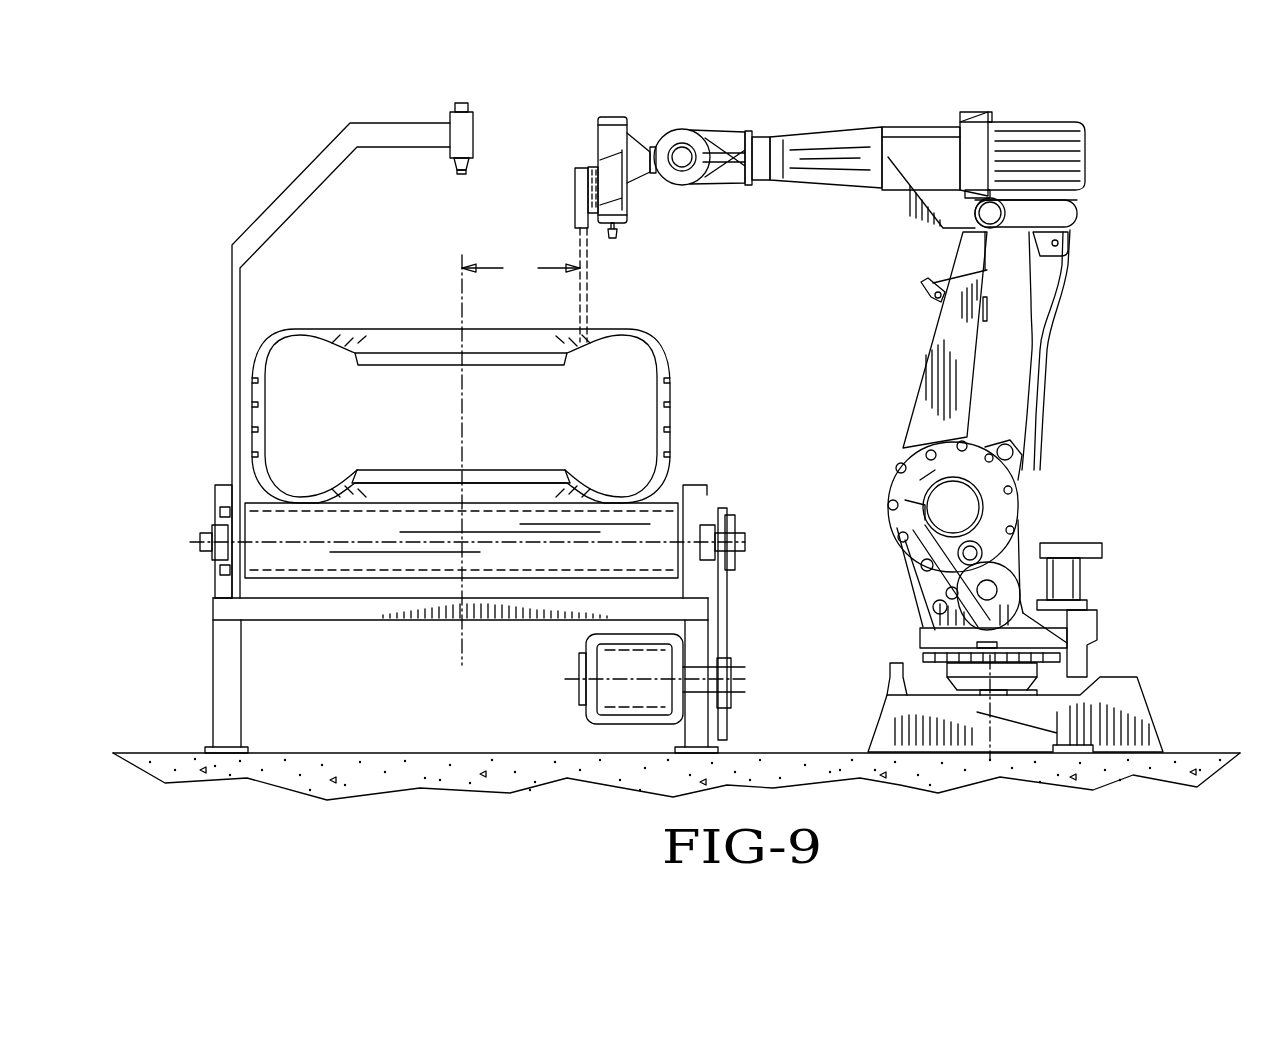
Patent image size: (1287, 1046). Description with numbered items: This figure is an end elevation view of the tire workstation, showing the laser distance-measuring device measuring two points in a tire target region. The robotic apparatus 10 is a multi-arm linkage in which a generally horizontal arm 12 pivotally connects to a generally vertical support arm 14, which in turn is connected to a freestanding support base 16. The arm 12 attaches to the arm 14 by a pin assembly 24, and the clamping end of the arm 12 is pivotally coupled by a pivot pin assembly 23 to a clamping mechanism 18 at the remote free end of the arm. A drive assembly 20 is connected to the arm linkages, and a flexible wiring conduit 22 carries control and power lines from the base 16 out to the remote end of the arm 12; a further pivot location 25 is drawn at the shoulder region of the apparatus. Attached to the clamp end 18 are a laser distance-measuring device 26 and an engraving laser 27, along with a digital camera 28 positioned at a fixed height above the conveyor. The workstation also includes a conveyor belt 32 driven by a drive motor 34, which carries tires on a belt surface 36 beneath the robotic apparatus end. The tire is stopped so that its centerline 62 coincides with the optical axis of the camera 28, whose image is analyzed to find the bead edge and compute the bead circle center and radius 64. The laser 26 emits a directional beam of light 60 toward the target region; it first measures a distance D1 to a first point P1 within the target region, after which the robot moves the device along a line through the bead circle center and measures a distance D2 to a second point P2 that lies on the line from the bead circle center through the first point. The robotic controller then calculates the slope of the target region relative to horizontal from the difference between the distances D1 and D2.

The robotic apparatus 10 is at (1210, 168).
The horizontal arm 12 is at (818, 156).
The vertical support arm 14 is at (951, 363).
The support base 16 is at (1128, 723).
The clamping mechanism 18 is at (678, 130).
The drive assembly 20 is at (906, 496).
The flexible wiring conduit 22 is at (1043, 346).
The pivot pin assembly 23 is at (687, 155).
The pin assembly 24 is at (1021, 150).
The shoulder axis 25 is at (951, 506).
The laser distance-measuring device 26 is at (578, 198).
The engraving laser 27 is at (609, 141).
The digital camera 28 is at (456, 140).
The conveyor belt 32 is at (392, 627).
The drive motor 34 is at (612, 697).
The belt surface 36 is at (301, 556).
The directional beam of light 60 is at (578, 246).
The centerline 62 is at (459, 310).
The radius 64 is at (521, 269).
The first distance D1 is at (577, 289).
The second distance D2 is at (589, 300).
The first point P1 is at (575, 344).
The second point P2 is at (598, 340).